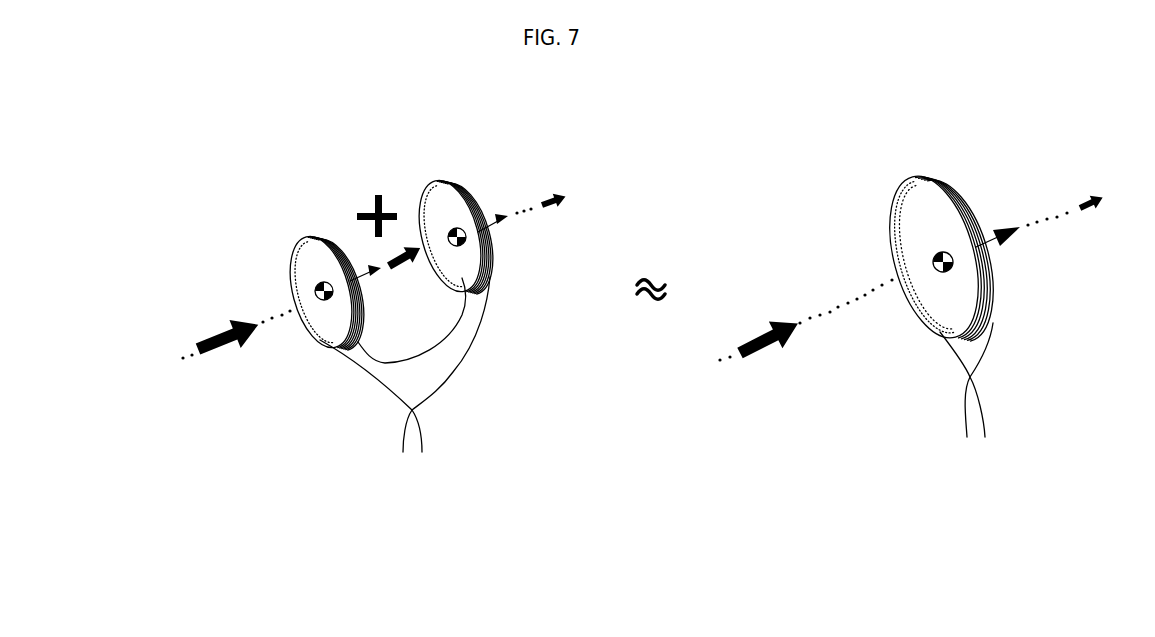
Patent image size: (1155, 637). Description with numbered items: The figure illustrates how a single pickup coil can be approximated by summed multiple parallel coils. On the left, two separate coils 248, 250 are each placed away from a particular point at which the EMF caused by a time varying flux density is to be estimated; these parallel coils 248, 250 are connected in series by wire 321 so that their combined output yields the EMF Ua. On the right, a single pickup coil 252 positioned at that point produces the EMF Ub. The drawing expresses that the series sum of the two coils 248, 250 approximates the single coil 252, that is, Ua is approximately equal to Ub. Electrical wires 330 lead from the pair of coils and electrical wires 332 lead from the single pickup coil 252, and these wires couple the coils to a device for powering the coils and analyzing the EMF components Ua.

The separate coil 248 is at (298, 222).
The separate coil 250 is at (450, 172).
The single pickup coil 252 is at (997, 292).
The wire 321 is at (453, 345).
The electrical wires 330 is at (437, 428).
The electrical wires 332 is at (992, 393).